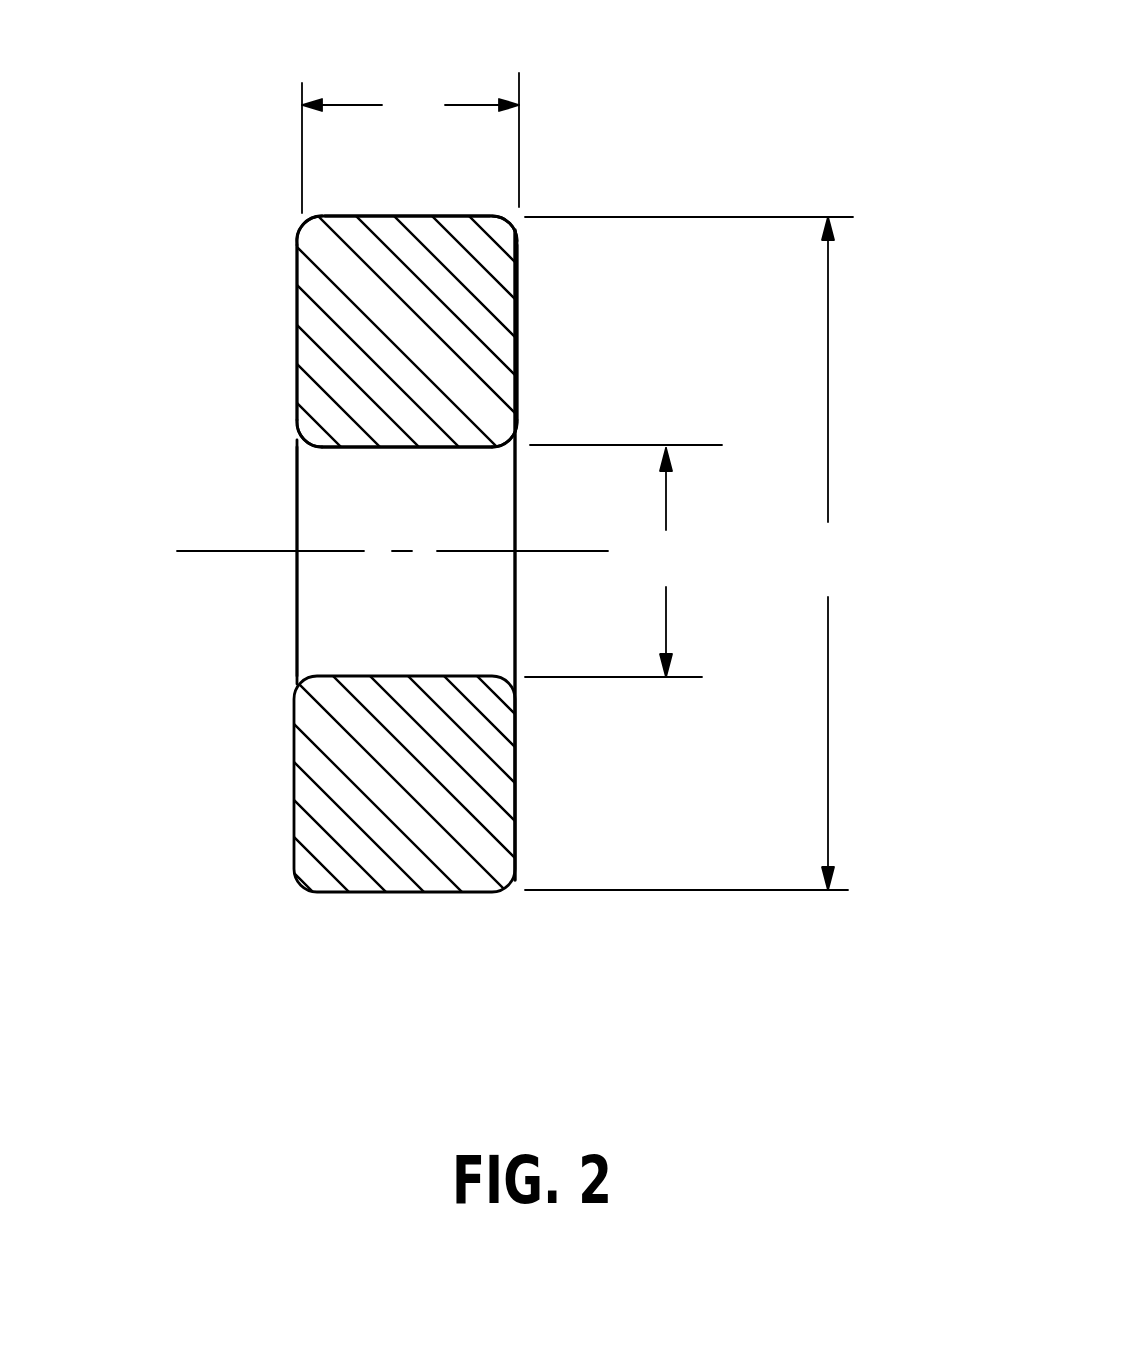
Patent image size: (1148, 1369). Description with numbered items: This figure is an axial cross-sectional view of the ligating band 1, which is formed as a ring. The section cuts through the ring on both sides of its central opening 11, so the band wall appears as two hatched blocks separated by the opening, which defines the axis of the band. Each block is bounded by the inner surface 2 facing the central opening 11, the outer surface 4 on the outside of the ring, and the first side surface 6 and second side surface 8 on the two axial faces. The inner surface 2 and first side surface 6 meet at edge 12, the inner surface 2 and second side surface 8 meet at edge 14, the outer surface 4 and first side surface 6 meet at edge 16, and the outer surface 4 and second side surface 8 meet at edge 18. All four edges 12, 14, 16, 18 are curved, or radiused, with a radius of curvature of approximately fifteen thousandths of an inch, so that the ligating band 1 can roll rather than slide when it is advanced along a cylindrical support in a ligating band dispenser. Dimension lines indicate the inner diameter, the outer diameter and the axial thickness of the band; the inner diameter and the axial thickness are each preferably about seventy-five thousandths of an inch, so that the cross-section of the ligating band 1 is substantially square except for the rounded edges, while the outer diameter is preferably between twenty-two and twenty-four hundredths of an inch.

The ligating band 1 is at (594, 88).
The inner surface 2 is at (400, 447).
The outer surface 4 is at (412, 216).
The first side surface 6 is at (297, 327).
The second side surface 8 is at (517, 338).
The central opening 11 is at (297, 609).
The edge 12 is at (297, 434).
The edge 14 is at (517, 424).
The edge 16 is at (320, 214).
The edge 18 is at (520, 214).